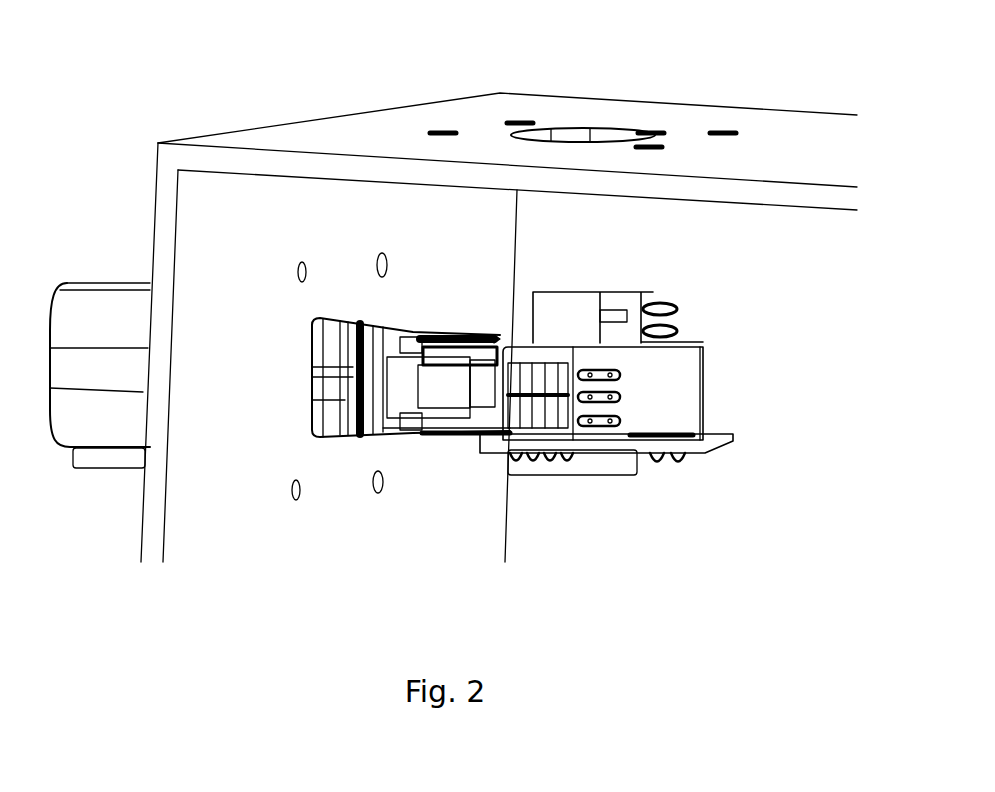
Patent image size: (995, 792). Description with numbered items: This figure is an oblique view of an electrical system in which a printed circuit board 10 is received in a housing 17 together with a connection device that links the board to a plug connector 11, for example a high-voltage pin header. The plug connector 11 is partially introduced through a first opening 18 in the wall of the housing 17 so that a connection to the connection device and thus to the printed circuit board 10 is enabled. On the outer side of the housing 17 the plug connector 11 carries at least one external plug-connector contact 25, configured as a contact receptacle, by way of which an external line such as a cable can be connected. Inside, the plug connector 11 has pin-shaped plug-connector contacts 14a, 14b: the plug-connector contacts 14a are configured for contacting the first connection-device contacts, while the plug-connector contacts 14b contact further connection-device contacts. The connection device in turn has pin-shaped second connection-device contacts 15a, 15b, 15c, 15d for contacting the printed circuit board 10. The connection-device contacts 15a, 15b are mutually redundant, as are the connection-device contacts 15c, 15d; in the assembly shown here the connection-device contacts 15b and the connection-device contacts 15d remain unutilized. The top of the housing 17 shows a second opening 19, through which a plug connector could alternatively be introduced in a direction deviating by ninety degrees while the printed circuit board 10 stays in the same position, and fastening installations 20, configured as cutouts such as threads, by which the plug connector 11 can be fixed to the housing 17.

The printed circuit board 10 is at (710, 448).
The plug connector 11 is at (108, 330).
The plug-connector contacts 14a is at (453, 330).
The plug-connector contacts 14b is at (480, 360).
The second connection-device contacts 15a is at (675, 485).
The second connection-device contacts 15b is at (668, 299).
The second connection-device contacts 15c is at (550, 484).
The second connection-device contacts 15d is at (630, 390).
The housing 17 is at (156, 572).
The first opening 18 is at (330, 447).
The second opening 19 is at (582, 127).
The fastening installations 20 is at (724, 128).
The external plug-connector contact 25 is at (48, 390).